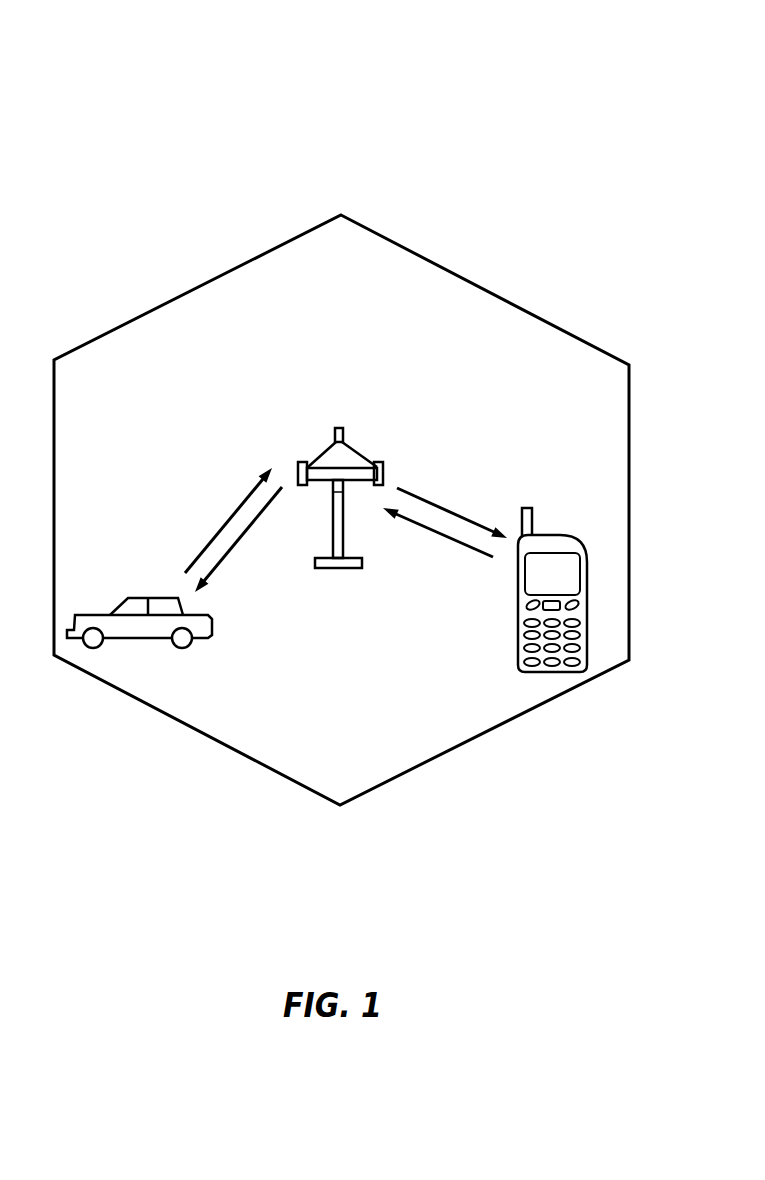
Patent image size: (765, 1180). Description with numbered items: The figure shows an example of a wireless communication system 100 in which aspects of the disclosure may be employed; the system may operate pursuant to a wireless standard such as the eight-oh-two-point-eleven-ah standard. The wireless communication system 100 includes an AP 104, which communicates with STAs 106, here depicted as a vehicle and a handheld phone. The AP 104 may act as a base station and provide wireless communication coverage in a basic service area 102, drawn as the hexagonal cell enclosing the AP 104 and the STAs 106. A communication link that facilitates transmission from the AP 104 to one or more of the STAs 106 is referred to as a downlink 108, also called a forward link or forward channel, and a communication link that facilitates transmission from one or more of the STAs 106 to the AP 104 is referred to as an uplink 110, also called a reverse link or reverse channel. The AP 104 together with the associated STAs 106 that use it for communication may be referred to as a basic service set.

The wireless communication system 100 is at (612, 98).
The basic service area 102 is at (605, 350).
The AP 104 is at (338, 427).
The STAs 106 is at (142, 597).
The downlink 108 is at (433, 503).
The uplink 110 is at (422, 530).